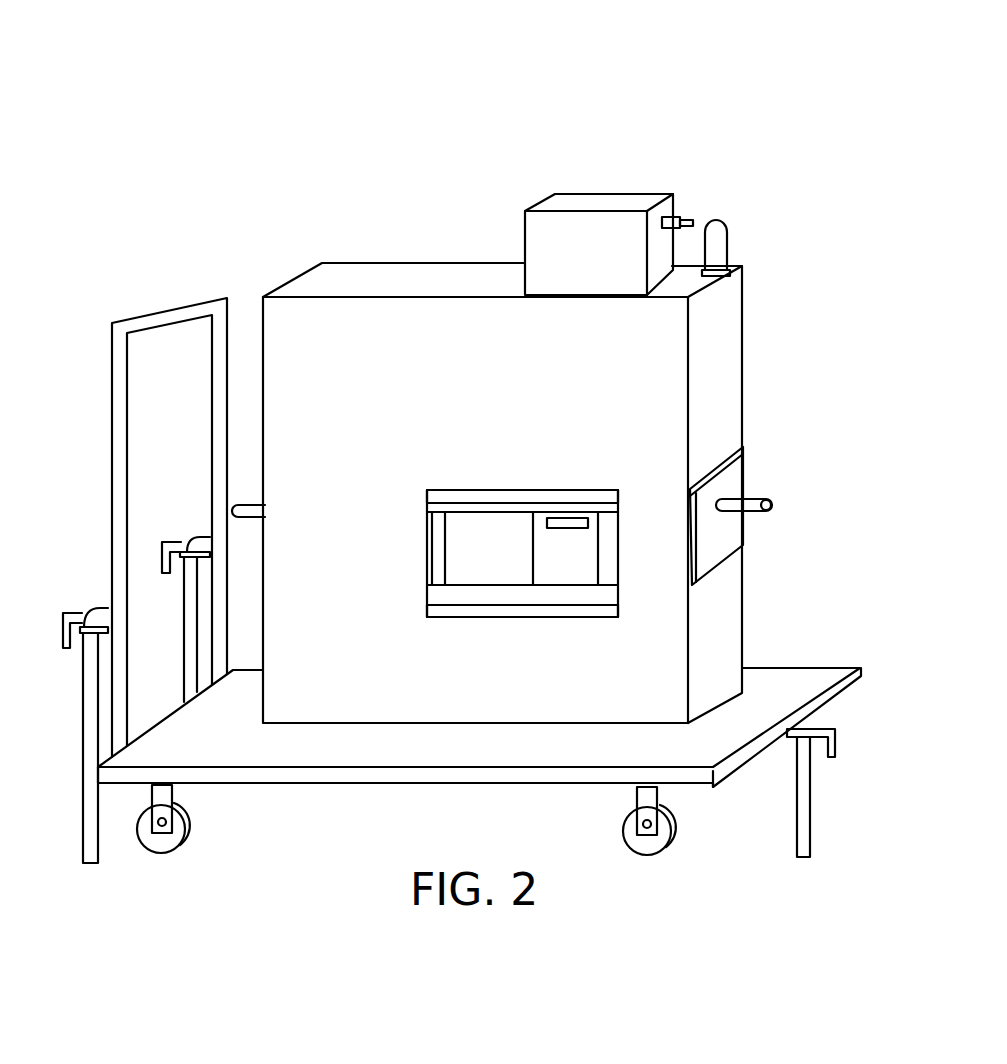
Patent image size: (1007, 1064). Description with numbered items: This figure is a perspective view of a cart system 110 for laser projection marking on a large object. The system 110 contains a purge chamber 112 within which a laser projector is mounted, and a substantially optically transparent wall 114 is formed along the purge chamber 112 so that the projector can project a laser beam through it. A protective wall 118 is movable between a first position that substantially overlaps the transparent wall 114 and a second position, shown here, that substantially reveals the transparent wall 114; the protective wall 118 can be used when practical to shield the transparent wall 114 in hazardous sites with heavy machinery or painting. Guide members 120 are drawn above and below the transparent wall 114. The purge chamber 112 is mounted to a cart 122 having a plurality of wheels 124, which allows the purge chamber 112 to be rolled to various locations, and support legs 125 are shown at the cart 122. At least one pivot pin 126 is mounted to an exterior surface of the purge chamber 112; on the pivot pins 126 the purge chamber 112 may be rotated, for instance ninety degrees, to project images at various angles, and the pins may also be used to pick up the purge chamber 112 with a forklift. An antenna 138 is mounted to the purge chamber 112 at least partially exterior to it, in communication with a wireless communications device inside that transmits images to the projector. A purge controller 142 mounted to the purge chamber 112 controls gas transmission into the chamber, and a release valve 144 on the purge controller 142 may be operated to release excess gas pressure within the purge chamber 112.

The cart system 110 is at (675, 98).
The purge chamber 112 is at (333, 697).
The substantially optically transparent wall 114 is at (462, 543).
The protective wall 118 is at (602, 543).
The guide rail 120 is at (488, 502).
The cart 122 is at (178, 307).
The wheels 124 is at (195, 832).
The leveling leg 125 is at (85, 707).
The pivot pin 126 is at (238, 505).
The antenna 138 is at (727, 225).
The purge controller 142 is at (580, 225).
The release valve 144 is at (680, 217).